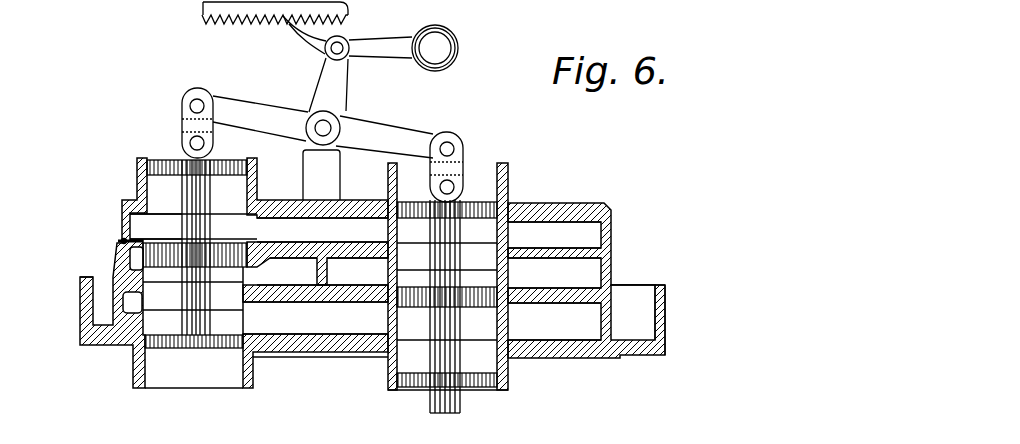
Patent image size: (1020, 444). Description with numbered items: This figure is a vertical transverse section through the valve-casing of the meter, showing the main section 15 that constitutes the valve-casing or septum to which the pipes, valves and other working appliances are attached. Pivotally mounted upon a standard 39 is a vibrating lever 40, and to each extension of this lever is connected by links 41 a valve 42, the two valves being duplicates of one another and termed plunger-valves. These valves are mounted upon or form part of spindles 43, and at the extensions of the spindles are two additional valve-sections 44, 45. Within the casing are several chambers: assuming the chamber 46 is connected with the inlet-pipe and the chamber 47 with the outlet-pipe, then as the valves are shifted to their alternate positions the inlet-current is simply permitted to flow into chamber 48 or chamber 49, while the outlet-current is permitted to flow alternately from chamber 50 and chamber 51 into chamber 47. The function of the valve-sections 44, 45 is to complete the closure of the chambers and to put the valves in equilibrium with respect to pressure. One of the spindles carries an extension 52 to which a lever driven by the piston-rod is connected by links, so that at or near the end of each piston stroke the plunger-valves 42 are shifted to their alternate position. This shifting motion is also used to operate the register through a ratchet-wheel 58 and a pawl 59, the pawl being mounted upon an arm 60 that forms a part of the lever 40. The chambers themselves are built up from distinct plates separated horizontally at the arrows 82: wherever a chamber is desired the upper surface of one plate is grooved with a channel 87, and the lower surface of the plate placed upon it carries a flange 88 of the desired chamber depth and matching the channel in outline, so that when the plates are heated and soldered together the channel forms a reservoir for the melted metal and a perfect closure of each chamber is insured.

The main section 15 is at (677, 320).
The standard 39 is at (321, 175).
The vibrating lever 40 is at (323, 127).
The links 41 is at (322, 145).
The valve 42 is at (320, 275).
The spindle 43 is at (210, 200).
The valve-section 44 is at (168, 170).
The valve-section 45 is at (185, 346).
The chamber 46 is at (560, 286).
The chamber 47 is at (284, 283).
The chamber 48 is at (560, 243).
The chamber 49 is at (558, 329).
The chamber 50 is at (285, 240).
The chamber 51 is at (283, 329).
The extension 52 is at (461, 407).
The ratchet-wheel 58 is at (275, 28).
The pawl 59 is at (391, 48).
The arm 60 is at (328, 85).
The arrows 82 is at (113, 278).
The channel 87 is at (124, 239).
The flange 88 is at (130, 229).